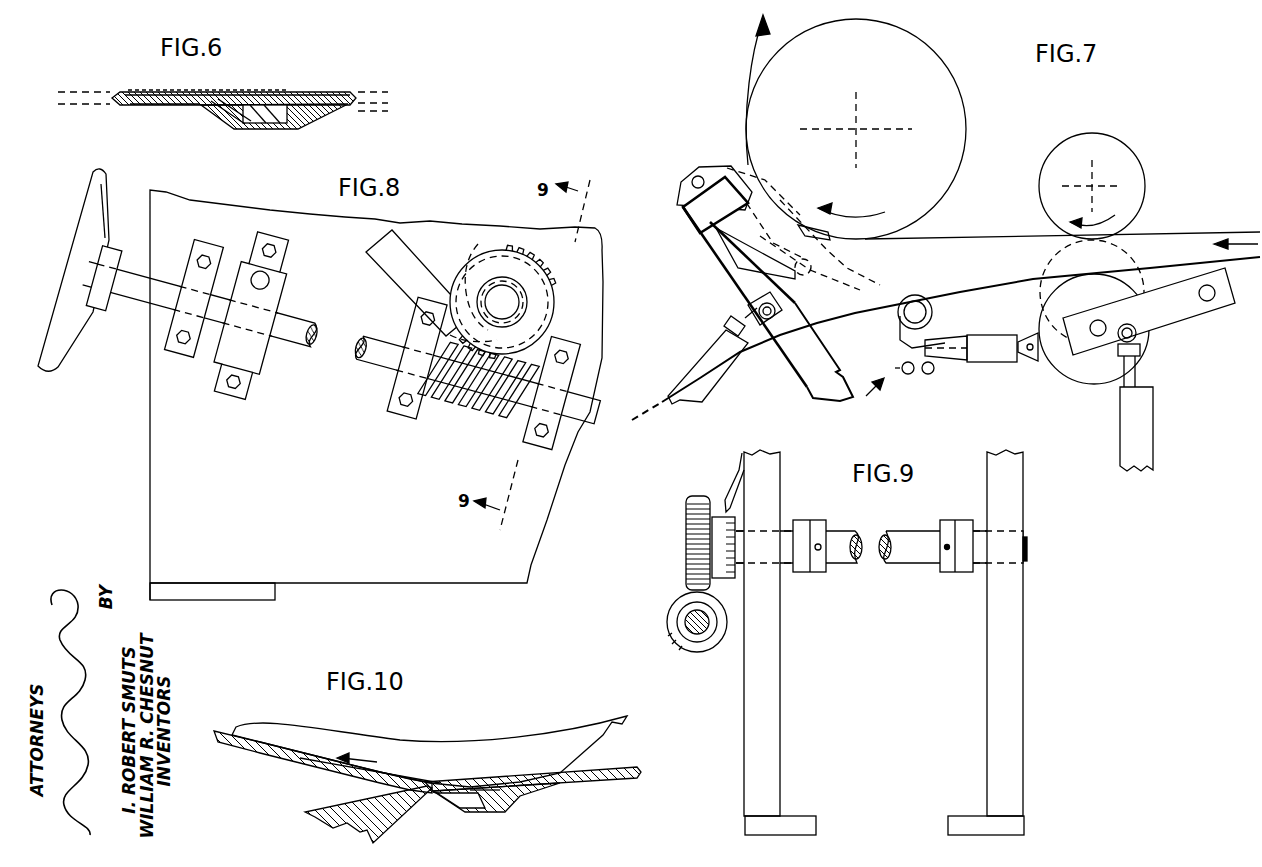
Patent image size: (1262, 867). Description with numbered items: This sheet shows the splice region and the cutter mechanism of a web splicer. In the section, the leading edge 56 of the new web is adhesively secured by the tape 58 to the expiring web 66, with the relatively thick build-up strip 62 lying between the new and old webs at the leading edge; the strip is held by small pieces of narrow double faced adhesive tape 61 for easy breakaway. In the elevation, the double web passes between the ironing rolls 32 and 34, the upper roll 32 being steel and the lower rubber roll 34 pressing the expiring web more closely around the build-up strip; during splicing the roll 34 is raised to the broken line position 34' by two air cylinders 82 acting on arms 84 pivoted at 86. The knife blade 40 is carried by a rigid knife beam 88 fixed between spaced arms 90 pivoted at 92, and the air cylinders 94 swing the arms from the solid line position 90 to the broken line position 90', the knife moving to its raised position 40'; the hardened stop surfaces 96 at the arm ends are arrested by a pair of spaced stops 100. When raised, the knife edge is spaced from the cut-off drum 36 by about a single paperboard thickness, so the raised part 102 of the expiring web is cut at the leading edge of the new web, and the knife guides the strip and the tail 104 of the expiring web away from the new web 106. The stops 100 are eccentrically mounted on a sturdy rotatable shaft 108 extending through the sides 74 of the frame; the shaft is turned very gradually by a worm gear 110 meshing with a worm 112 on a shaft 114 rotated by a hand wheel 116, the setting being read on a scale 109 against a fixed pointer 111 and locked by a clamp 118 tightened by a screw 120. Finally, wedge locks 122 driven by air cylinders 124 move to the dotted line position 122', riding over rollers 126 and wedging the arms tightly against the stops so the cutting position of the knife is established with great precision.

In FIG. 7, the ironing roll 32 is at (1138, 168).
In FIG. 7, the ironing roll 34 is at (1094, 347).
In FIG. 7, the raised position of roll 34' is at (1062, 288).
In FIG. 7, the cut-off drum 36 is at (946, 78).
In FIG. 10, the cut-off drum 36 is at (477, 748).
In FIG. 7, the knife blade 40 is at (748, 266).
In FIG. 10, the knife blade 40 is at (368, 814).
In FIG. 7, the raised position of knife 40' is at (805, 221).
In FIG. 6, the leading edge 56 is at (244, 99).
In FIG. 10, the leading edge 56 is at (444, 784).
In FIG. 6, the adhesive tape 58 is at (176, 92).
In FIG. 10, the adhesive tape 58 is at (391, 780).
In FIG. 6, the double faced adhesive tape 61 is at (270, 103).
In FIG. 10, the double faced adhesive tape 61 is at (474, 784).
In FIG. 6, the build-up strip 62 is at (262, 131).
In FIG. 10, the build-up strip 62 is at (494, 802).
In FIG. 6, the expiring web 66 is at (155, 104).
In FIG. 10, the expiring web 66 is at (285, 768).
In FIG. 8, the splicer frame sides 74 is at (344, 556).
In FIG. 9, the splicer frame sides 74 is at (744, 740).
In FIG. 7, the air cylinders 82 is at (1153, 421).
In FIG. 7, the arms 84 is at (1165, 322).
In FIG. 7, the pivot 86 is at (1207, 302).
In FIG. 7, the knife beam 88 is at (694, 230).
In FIG. 7, the arms 90 is at (738, 262).
In FIG. 8, the arms 90 is at (418, 283).
In FIG. 7, the raised position of arms 90' is at (843, 245).
In FIG. 7, the pivot 92 is at (690, 180).
In FIG. 7, the air cylinders 94 is at (725, 385).
In FIG. 7, the stop surfaces 96 is at (846, 394).
In FIG. 8, the stop surfaces 96 is at (476, 283).
In FIG. 7, the stops 100 is at (896, 302).
In FIG. 8, the stops 100 is at (520, 285).
In FIG. 9, the stops 100 is at (800, 520).
In FIG. 10, the raised part of expiring web 102 is at (457, 813).
In FIG. 7, the tail 104 is at (646, 410).
In FIG. 10, the new web 106 is at (614, 768).
In FIG. 7, the rotatable shaft 108 is at (932, 313).
In FIG. 8, the rotatable shaft 108 is at (520, 304).
In FIG. 9, the rotatable shaft 108 is at (928, 560).
In FIG. 9, the scale 109 is at (727, 578).
In FIG. 8, the worm gear 110 is at (515, 258).
In FIG. 9, the worm gear 110 is at (686, 540).
In FIG. 9, the fixed pointer 111 is at (735, 475).
In FIG. 8, the worm 112 is at (480, 404).
In FIG. 9, the worm 112 is at (685, 644).
In FIG. 8, the shaft 114 is at (312, 350).
In FIG. 9, the shaft 114 is at (700, 635).
In FIG. 8, the hand wheel 116 is at (44, 365).
In FIG. 8, the clamp 118 is at (258, 352).
In FIG. 8, the screw 120 is at (270, 281).
In FIG. 7, the wedge locks 122 is at (946, 387).
In FIG. 7, the dotted line position of wedge locks 122' is at (915, 396).
In FIG. 7, the air cylinders 124 is at (980, 362).
In FIG. 7, the rollers 126 is at (904, 374).